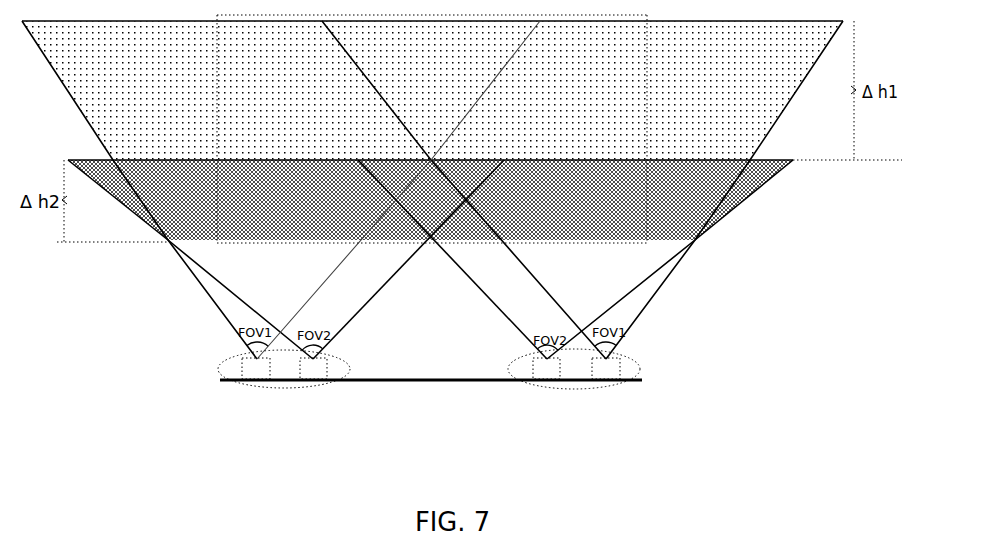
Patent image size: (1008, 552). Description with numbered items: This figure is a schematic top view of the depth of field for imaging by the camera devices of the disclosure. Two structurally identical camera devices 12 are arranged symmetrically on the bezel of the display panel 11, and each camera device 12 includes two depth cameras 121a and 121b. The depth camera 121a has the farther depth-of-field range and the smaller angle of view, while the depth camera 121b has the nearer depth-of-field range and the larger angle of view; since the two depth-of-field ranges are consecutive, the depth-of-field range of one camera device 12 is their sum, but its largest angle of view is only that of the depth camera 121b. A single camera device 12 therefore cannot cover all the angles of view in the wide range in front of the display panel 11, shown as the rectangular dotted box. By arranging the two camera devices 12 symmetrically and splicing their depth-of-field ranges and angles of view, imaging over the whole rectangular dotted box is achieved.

The display panel 11 is at (468, 412).
The camera device 12 is at (399, 400).
The depth camera 121a is at (242, 369).
The depth camera 121b is at (313, 381).